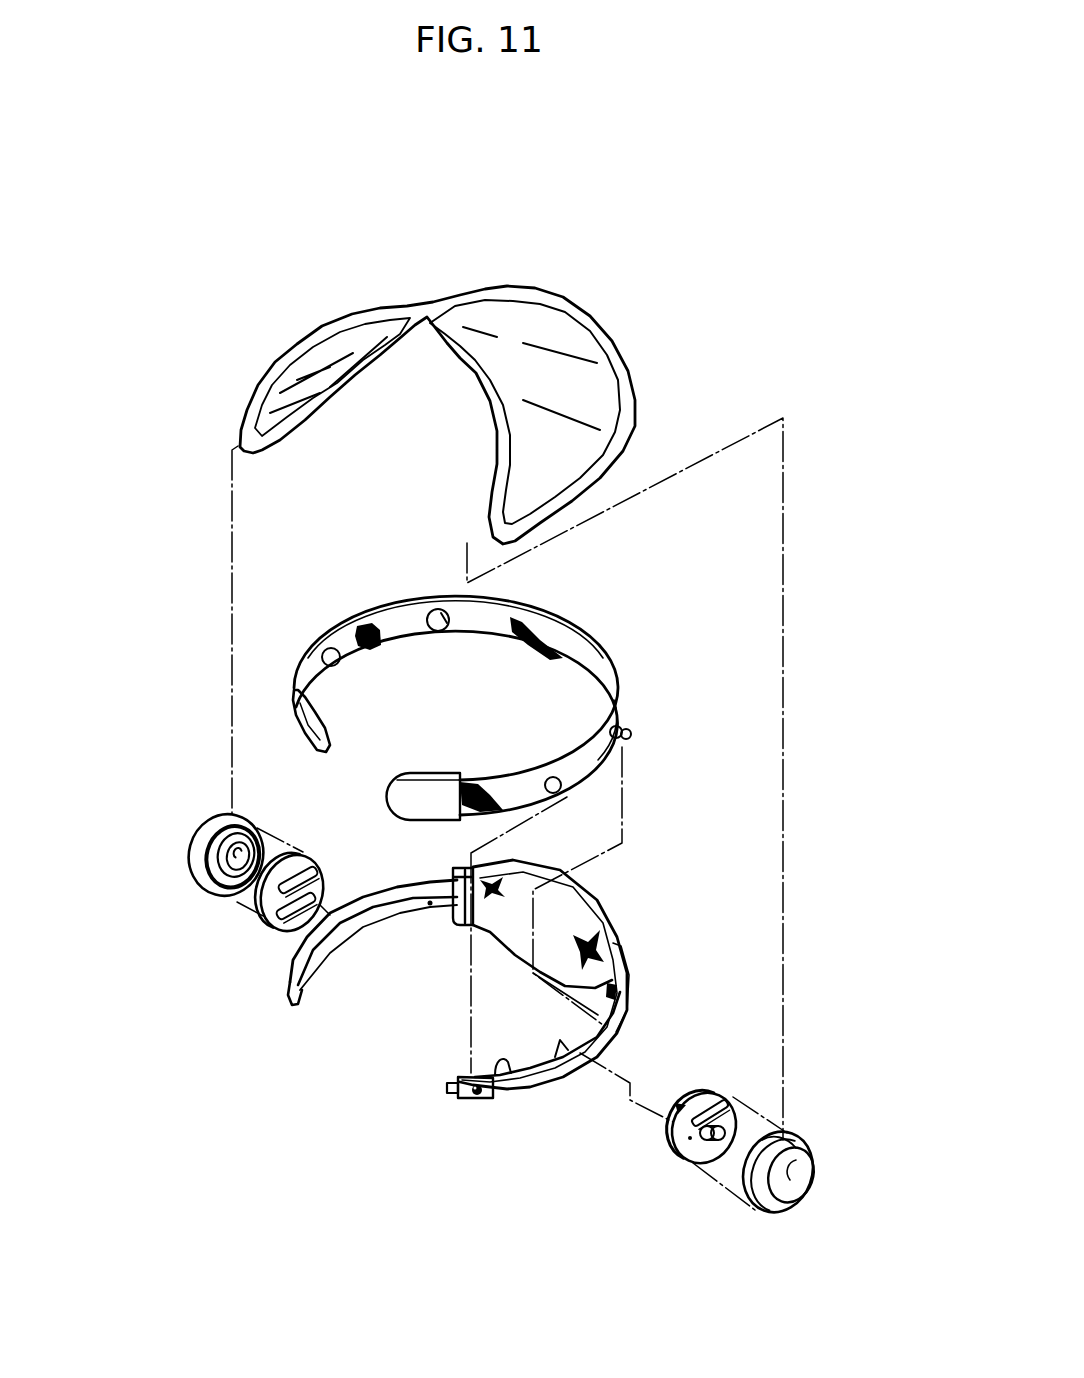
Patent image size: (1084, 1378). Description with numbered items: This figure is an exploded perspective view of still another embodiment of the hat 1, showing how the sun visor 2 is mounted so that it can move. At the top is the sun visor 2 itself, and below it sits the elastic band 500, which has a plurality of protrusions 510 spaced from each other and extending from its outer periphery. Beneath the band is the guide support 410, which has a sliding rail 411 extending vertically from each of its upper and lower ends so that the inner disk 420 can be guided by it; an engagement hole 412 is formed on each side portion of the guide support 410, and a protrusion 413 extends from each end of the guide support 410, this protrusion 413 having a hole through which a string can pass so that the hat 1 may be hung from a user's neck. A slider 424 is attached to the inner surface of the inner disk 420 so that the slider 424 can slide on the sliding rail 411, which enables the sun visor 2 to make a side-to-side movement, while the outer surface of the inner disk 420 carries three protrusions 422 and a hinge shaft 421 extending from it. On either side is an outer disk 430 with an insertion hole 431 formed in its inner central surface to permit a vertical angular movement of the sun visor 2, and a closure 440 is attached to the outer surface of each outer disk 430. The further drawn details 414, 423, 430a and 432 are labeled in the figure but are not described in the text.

The hat 1 is at (165, 445).
The sun visor 2 is at (553, 325).
The elastic band 500 is at (557, 640).
The protrusions 510 is at (450, 626).
The guide support 410 is at (537, 1060).
The sliding rail 411 is at (520, 1080).
The engagement hole 412 is at (487, 1103).
The protrusion 413 is at (450, 1108).
The tab 414 is at (450, 1078).
The inner disk 420 is at (320, 850).
The hinge shaft 421 is at (728, 1150).
The protrusions 422 is at (730, 1100).
The slot 423 is at (314, 874).
The slider 424 is at (320, 894).
The outer disk 430 is at (193, 820).
The housing ring edge 430a is at (790, 1133).
The insertion hole 431 is at (240, 890).
The inner ring 432 is at (207, 886).
The closure 440 is at (805, 1188).